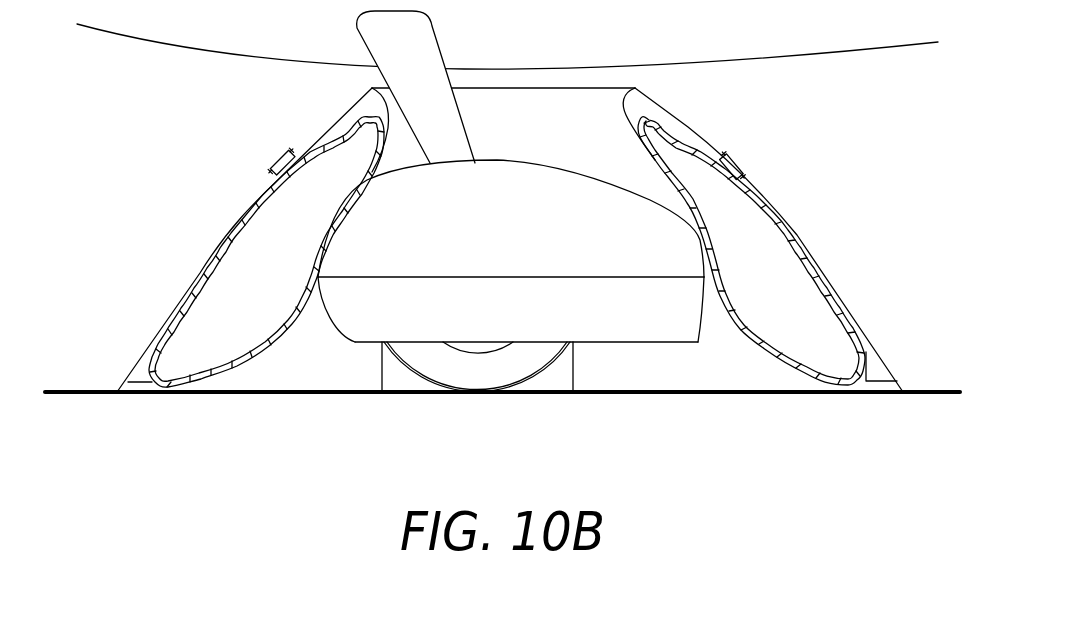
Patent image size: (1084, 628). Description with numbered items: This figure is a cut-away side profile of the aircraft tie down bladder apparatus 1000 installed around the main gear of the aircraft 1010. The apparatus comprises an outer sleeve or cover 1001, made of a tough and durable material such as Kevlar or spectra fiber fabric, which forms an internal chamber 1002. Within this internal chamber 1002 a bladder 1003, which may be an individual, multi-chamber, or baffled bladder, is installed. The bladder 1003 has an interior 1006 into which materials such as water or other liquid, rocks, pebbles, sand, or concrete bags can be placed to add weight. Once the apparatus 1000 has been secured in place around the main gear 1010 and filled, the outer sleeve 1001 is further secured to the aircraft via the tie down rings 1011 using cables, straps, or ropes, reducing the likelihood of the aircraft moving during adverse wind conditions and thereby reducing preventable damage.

The aircraft tie down bladder apparatus 1000 is at (797, 180).
The outer sleeve or cover 1001 is at (855, 312).
The internal chamber 1002 is at (877, 377).
The bladder 1003 is at (798, 370).
The interior of the bladder 1006 is at (797, 277).
The main gear of the aircraft 1010 is at (625, 343).
The tie down rings 1011 is at (296, 160).